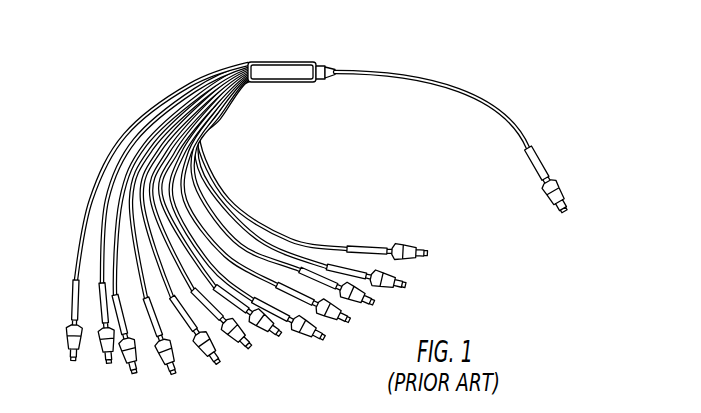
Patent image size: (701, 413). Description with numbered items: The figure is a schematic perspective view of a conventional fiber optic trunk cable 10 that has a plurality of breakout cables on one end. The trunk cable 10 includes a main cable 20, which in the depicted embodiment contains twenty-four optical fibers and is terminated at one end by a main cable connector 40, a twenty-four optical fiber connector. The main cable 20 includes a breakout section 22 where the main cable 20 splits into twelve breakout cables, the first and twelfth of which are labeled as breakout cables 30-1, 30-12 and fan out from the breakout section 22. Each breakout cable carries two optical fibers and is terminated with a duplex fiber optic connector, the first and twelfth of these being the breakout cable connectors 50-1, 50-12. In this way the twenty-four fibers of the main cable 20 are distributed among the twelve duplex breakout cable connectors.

The fiber optic trunk cable 10 is at (157, 72).
The main cable 20 is at (400, 71).
The breakout section 22 is at (300, 62).
The breakout cable 30-1 is at (110, 160).
The breakout cable 30-12 is at (212, 172).
The main cable connector 40 is at (562, 187).
The breakout cable connector 50-1 is at (70, 330).
The breakout cable connector 50-12 is at (425, 252).